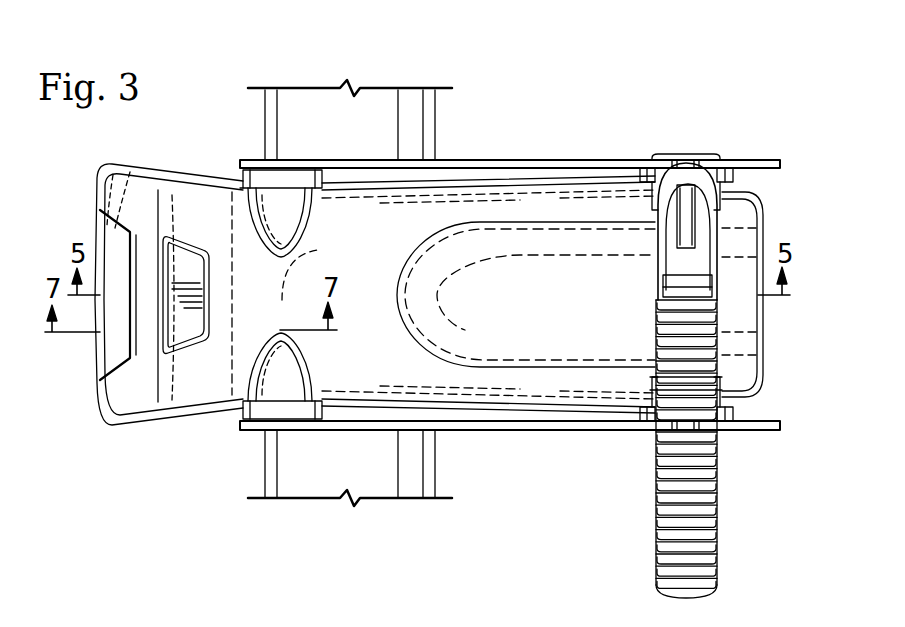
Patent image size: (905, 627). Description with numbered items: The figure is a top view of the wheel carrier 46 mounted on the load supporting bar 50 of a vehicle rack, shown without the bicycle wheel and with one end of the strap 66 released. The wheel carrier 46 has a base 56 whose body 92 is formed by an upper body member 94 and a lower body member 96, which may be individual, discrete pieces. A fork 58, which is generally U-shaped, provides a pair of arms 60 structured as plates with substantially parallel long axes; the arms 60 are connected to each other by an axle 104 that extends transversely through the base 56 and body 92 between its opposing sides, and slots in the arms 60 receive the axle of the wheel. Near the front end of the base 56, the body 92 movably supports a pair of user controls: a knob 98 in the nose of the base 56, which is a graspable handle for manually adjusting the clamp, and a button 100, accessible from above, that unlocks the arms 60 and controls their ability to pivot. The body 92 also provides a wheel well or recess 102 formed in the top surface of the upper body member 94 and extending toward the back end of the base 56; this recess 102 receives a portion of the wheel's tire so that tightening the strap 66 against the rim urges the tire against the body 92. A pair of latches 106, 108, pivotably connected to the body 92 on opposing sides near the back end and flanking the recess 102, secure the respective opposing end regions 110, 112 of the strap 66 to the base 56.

The wheel carrier 46 is at (616, 137).
The load supporting bar 50 is at (263, 140).
The base 56 is at (98, 161).
The fork 58 is at (459, 150).
The arms 60 is at (537, 161).
The strap 66 is at (685, 380).
The body 92 is at (136, 160).
The upper body member 94 is at (176, 193).
The lower body member 96 is at (206, 190).
The knob 98 is at (99, 357).
The button 100 is at (187, 354).
The recess 102 is at (586, 312).
The axle 104 is at (307, 250).
The latch 106 is at (760, 183).
The latch 108 is at (760, 408).
The end region 110 is at (684, 150).
The end region 112 is at (717, 548).